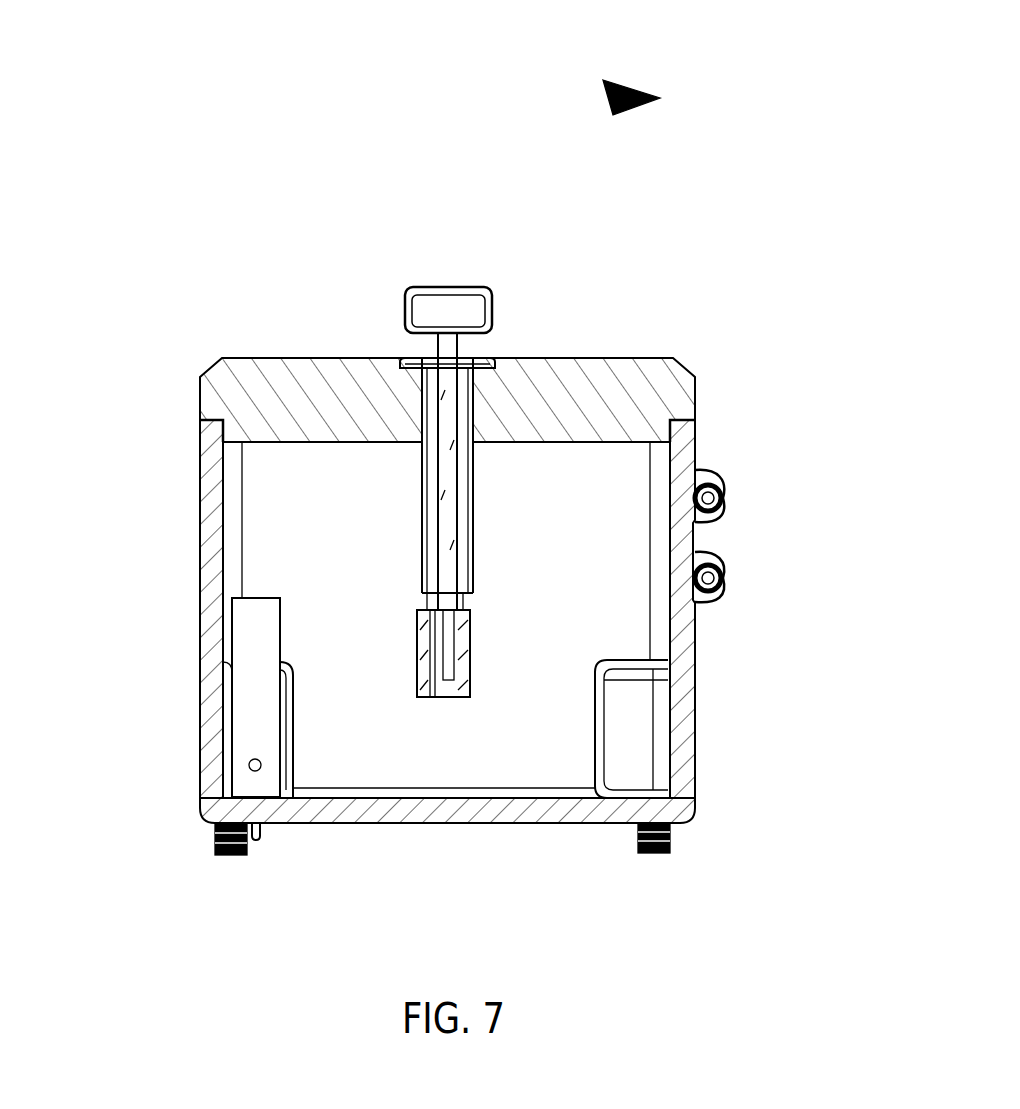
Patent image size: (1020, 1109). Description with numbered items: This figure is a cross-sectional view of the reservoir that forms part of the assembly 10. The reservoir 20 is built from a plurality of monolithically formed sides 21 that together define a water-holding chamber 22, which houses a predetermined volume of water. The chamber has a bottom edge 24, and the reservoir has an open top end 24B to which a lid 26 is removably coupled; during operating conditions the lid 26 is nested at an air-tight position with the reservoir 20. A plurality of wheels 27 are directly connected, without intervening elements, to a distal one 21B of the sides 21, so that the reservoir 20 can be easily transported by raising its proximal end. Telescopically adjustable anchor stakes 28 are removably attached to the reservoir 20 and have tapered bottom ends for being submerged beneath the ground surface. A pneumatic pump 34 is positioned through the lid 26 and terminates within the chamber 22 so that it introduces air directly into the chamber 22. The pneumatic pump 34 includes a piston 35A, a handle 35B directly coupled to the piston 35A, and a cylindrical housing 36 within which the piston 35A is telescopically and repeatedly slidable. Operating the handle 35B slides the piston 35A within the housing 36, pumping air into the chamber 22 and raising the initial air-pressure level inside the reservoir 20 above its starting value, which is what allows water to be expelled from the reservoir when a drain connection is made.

The assembly 10 is at (630, 90).
The reservoir 20 is at (181, 831).
The sides 21 is at (207, 668).
The distal one of the sides 21B is at (620, 468).
The water-holding chamber 22 is at (492, 743).
The bottom edge 24 is at (422, 797).
The open top end 24B is at (200, 440).
The lid 26 is at (623, 376).
The wheels 27 is at (233, 855).
The telescopically adjustable anchor stakes 28 is at (723, 498).
The pneumatic pump 34 is at (405, 358).
The piston 35A is at (448, 500).
The handle 35B is at (447, 287).
The cylindrical housing 36 is at (462, 592).